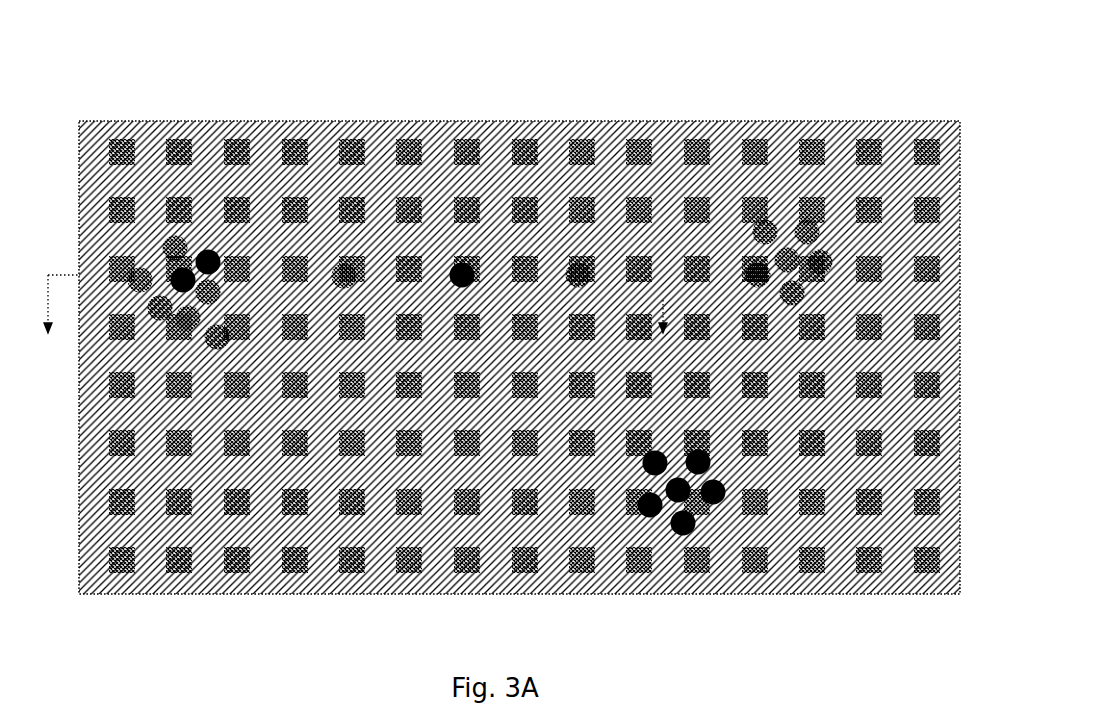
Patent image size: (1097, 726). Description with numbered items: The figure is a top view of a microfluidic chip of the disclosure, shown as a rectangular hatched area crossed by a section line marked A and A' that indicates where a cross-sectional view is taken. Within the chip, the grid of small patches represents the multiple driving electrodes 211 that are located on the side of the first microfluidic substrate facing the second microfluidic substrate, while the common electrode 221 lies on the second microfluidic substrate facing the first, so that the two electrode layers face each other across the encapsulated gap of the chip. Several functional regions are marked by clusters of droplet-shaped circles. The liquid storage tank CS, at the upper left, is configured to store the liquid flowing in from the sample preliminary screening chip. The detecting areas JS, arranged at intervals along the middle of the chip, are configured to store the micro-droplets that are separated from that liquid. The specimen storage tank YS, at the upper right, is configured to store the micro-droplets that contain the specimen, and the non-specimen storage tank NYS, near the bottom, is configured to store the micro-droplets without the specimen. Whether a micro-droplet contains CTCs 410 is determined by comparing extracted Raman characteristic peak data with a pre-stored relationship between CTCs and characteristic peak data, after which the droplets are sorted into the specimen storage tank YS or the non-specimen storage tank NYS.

The driving electrodes 211 is at (512, 120).
The common electrode 221 is at (591, 120).
The CTCs 410 is at (656, 120).
The liquid storage tank CS is at (205, 236).
The detecting areas JS is at (352, 262).
The specimen storage tank YS is at (783, 218).
The non-specimen storage tank NYS is at (668, 596).
The section line A is at (61, 315).
The section line A' is at (665, 328).